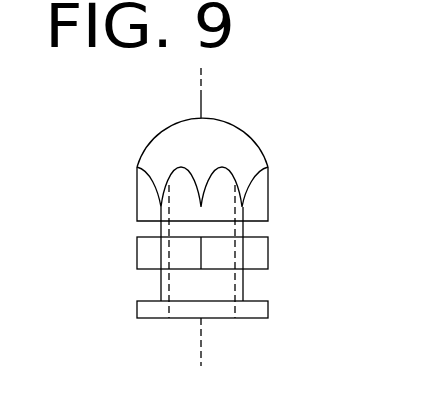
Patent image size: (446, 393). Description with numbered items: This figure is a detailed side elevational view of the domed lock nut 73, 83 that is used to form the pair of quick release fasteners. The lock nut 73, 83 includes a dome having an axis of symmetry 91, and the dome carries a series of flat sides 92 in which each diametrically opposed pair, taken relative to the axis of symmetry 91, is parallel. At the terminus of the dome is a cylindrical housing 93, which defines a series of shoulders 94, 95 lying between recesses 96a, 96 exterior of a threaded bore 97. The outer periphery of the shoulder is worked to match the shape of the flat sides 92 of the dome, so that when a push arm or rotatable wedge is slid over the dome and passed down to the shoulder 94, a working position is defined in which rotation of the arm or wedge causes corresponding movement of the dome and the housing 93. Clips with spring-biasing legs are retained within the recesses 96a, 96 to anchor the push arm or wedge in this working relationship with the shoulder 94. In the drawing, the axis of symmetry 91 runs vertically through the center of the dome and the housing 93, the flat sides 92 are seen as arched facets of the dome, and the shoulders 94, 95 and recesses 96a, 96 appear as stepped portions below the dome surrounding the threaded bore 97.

The lock nut 73 is at (268, 73).
The lock nut 83 is at (197, 217).
The axis of symmetry 91 is at (200, 105).
The flat sides 92 is at (226, 174).
The cylindrical housing 93 is at (270, 252).
The shoulder 94 is at (268, 237).
The shoulder 95 is at (268, 312).
The recess 96 is at (250, 296).
The recess 96a is at (160, 286).
The threaded bore 97 is at (166, 229).